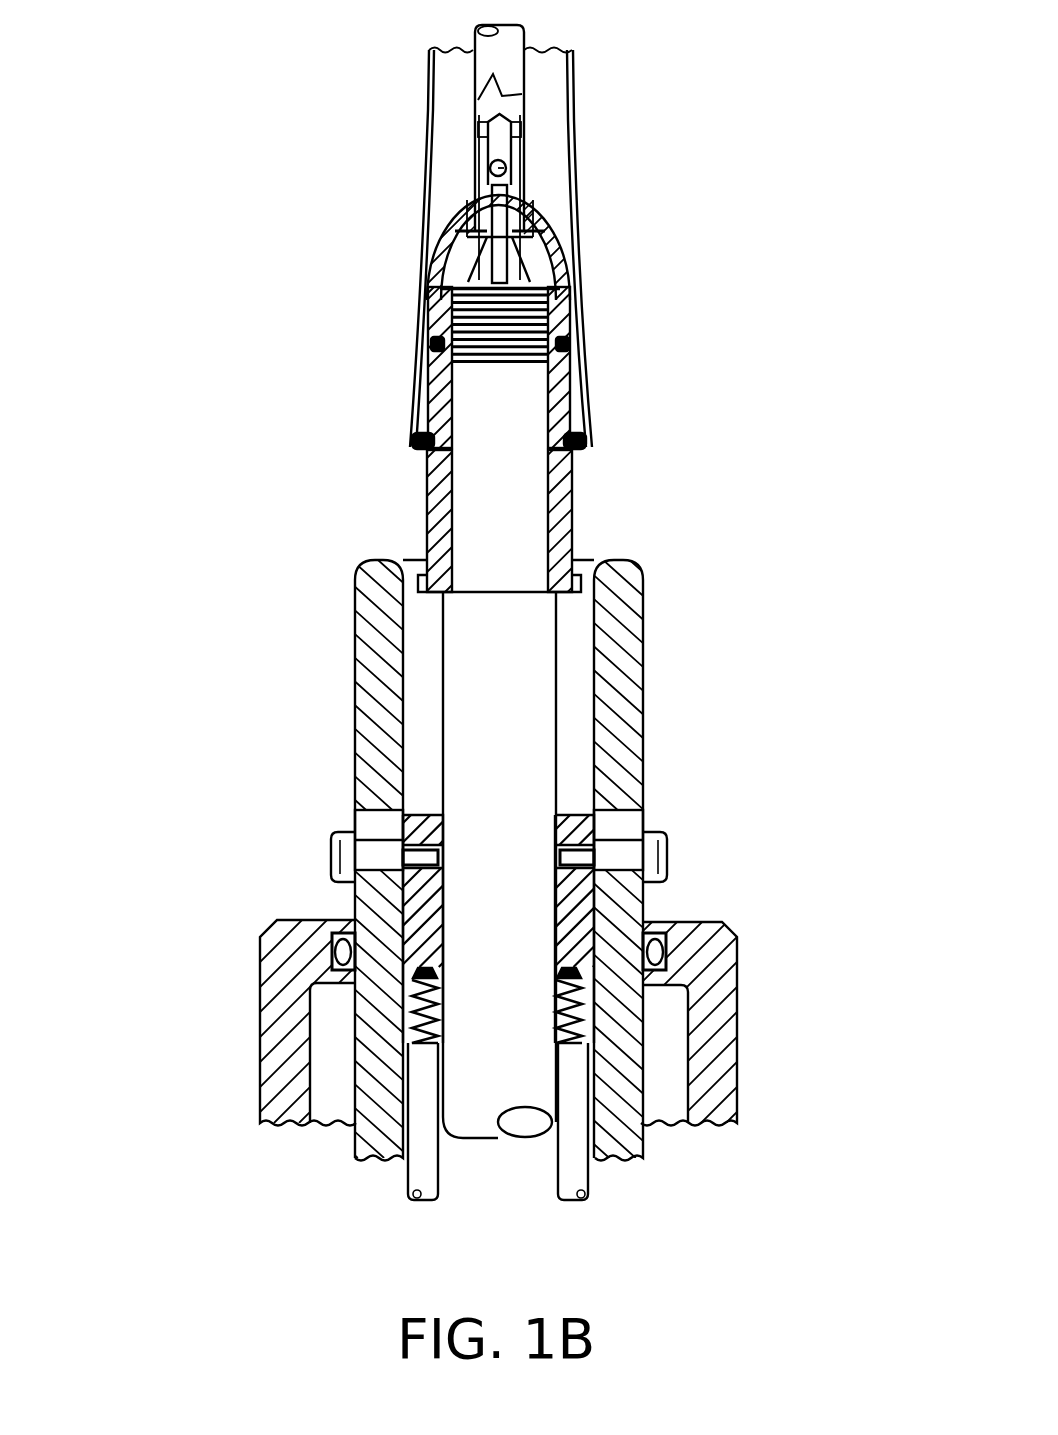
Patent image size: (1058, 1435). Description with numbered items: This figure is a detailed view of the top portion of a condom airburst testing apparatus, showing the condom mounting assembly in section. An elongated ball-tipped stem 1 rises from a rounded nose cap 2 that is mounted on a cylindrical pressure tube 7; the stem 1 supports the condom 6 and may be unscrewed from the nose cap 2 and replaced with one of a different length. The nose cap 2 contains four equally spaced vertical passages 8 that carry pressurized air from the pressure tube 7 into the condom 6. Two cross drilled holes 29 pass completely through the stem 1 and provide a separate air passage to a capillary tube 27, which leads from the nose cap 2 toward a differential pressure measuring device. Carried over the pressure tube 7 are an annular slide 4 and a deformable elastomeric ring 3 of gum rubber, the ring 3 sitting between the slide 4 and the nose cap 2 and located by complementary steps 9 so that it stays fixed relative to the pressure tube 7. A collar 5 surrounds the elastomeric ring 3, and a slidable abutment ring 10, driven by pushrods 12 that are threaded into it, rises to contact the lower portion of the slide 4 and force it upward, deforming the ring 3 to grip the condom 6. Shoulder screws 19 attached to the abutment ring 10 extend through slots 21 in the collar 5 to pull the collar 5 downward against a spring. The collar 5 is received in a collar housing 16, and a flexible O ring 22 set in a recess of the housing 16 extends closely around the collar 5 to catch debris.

The elongated stem 1 is at (515, 82).
The nose cap 2 is at (560, 298).
The deformable elastomeric ring 3 is at (560, 403).
The slide 4 is at (557, 513).
The collar 5 is at (625, 765).
The condom 6 is at (590, 272).
The pressure tube 7 is at (528, 477).
The vertical passages 8 is at (548, 252).
The complementary steps 9 is at (425, 435).
The slidable abutment ring 10 is at (577, 895).
The push rod 12 is at (575, 1182).
The housing 16 is at (717, 1053).
The shoulder screws 19 is at (670, 846).
The slots 21 is at (620, 827).
The O ring 22 is at (657, 955).
The capillary tube 27 is at (480, 197).
The cross drilled holes 29 is at (503, 163).